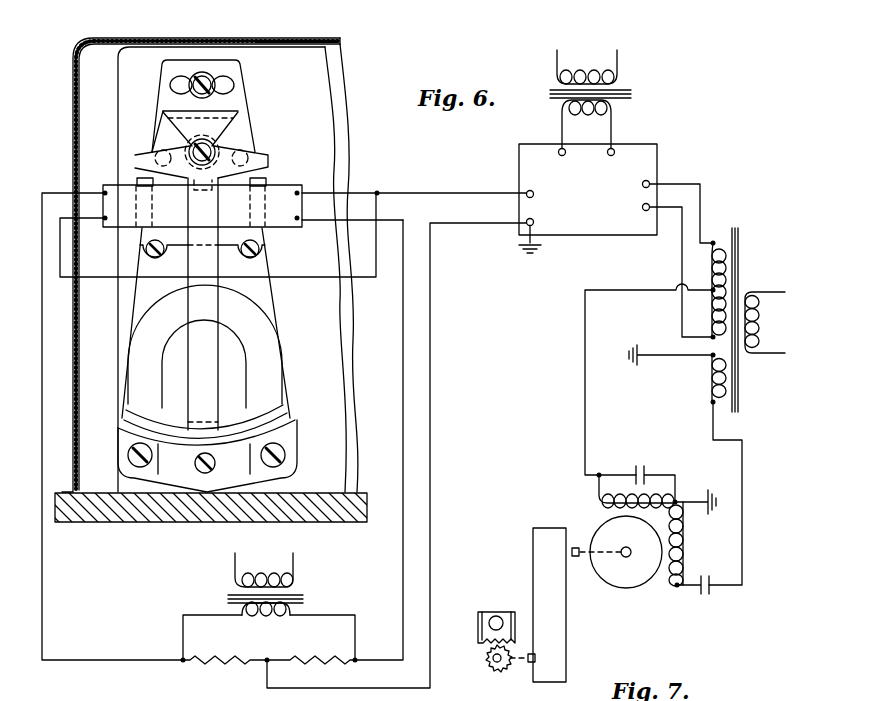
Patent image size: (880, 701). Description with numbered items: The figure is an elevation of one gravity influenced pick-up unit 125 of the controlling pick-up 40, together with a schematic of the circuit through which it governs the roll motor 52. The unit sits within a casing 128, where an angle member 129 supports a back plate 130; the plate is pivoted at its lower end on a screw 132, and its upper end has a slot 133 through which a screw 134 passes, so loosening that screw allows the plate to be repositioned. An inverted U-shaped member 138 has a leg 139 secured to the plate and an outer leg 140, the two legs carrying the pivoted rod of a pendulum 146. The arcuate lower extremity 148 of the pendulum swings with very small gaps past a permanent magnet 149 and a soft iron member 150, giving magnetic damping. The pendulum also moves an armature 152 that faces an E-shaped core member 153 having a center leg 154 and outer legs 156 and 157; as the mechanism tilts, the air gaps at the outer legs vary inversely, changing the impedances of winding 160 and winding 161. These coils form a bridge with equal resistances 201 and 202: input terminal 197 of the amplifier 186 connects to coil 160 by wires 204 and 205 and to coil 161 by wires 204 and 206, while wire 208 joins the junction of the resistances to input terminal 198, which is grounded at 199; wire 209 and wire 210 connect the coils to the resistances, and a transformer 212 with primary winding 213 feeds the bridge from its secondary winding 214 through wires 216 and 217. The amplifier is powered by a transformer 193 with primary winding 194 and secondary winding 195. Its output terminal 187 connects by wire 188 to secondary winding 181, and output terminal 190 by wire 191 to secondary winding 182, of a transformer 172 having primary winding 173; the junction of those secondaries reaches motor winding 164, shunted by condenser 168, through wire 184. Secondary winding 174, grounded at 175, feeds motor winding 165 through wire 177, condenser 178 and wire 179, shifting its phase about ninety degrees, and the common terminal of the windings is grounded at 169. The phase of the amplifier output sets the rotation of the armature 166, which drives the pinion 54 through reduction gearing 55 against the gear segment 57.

The controlling pick-up 40 is at (352, 72).
The roll motor 52 is at (658, 594).
The pinion 54 is at (486, 664).
The reduction gearing 55 is at (566, 624).
The gear segment 57 is at (480, 634).
The pick-up unit 125 is at (284, 302).
The casing 128 is at (281, 38).
The angle member 129 is at (316, 113).
The back plate 130 is at (238, 95).
The screw 132 is at (215, 466).
The slot 133 is at (226, 80).
The screw 134 is at (185, 79).
The inverted U-shaped member 138 is at (226, 128).
The leg 139 is at (160, 128).
The outer leg 140 is at (180, 130).
The pendulum 146 is at (213, 378).
The lower extremity of the pendulum 148 is at (278, 412).
The permanent magnet 149 is at (263, 368).
The soft iron member 150 is at (280, 439).
The armature 152 is at (257, 156).
The E-shaped core member 153 is at (263, 236).
The center leg 154 is at (196, 210).
The outer leg 156 is at (138, 178).
The outer leg 157 is at (263, 173).
The winding 160 is at (116, 226).
The winding 161 is at (278, 192).
The winding 164 is at (611, 490).
The winding 165 is at (685, 540).
The armature 166 is at (597, 530).
The condenser 168 is at (645, 468).
The ground 169 is at (707, 490).
The transformer 172 is at (747, 372).
The primary winding 173 is at (759, 321).
The secondary winding 174 is at (712, 381).
The ground 175 is at (638, 360).
The wire 177 is at (743, 522).
The condenser 178 is at (711, 590).
The wire 179 is at (688, 594).
The secondary winding 181 is at (711, 265).
The secondary winding 182 is at (711, 307).
The wire 184 is at (585, 396).
The amplifier 186 is at (601, 238).
The output terminal 187 is at (651, 182).
The wire 188 is at (701, 204).
The output terminal 190 is at (650, 209).
The wire 191 is at (681, 272).
The transformer 193 is at (642, 100).
The primary winding 194 is at (585, 73).
The secondary winding 195 is at (612, 118).
The input terminal 197 is at (527, 191).
The input terminal 198 is at (528, 219).
The ground 199 is at (518, 243).
The resistance 201 is at (223, 663).
The resistance 202 is at (318, 663).
The wire 204 is at (419, 192).
The wire 205 is at (382, 219).
The wire 206 is at (376, 190).
The wire 208 is at (436, 329).
The wire 209 is at (45, 557).
The wire 210 is at (404, 551).
The transformer 212 is at (314, 592).
The primary winding 213 is at (258, 574).
The secondary winding 214 is at (268, 615).
The wire 216 is at (189, 612).
The wire 217 is at (340, 613).